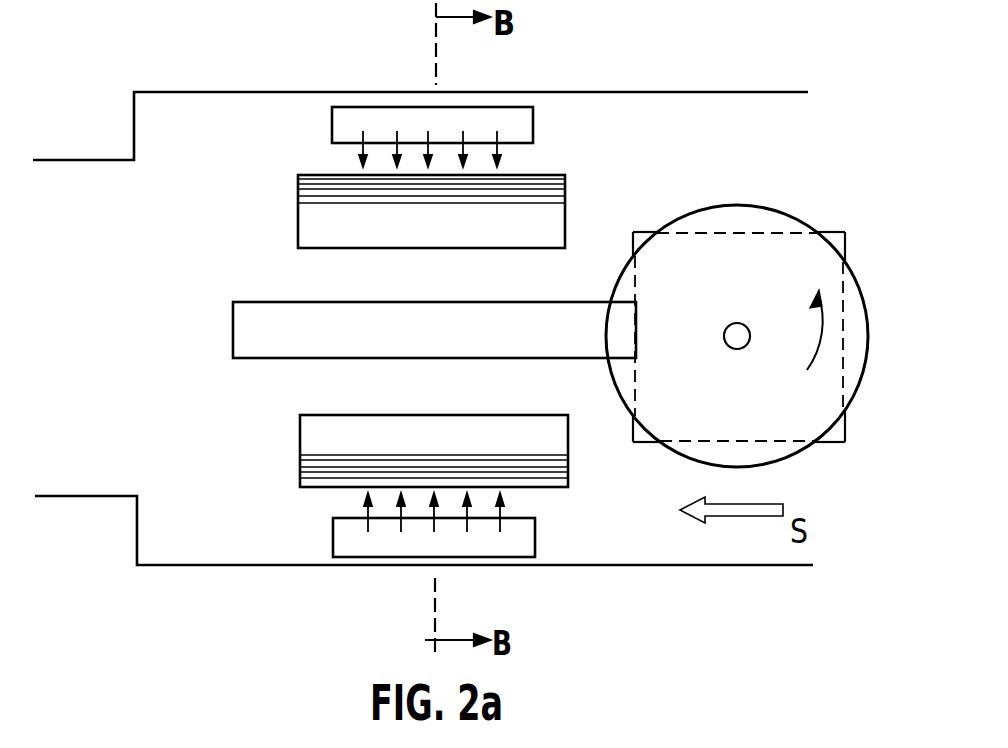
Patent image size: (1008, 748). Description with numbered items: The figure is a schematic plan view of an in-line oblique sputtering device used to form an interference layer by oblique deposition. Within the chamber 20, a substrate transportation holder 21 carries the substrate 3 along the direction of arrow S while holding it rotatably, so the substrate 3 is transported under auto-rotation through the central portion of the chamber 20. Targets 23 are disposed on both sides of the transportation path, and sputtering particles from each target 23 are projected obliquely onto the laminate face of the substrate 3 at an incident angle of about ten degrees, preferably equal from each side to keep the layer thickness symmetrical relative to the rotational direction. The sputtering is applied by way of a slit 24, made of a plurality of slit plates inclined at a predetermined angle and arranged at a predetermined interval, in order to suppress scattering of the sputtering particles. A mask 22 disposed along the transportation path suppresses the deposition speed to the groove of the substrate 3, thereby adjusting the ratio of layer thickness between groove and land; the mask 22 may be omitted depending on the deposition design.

The substrate 3 is at (781, 211).
The chamber 20 is at (215, 92).
The substrate transportation holder 21 is at (845, 246).
The mask 22 is at (252, 302).
The targets 23 is at (386, 122).
The slit 24 is at (298, 222).